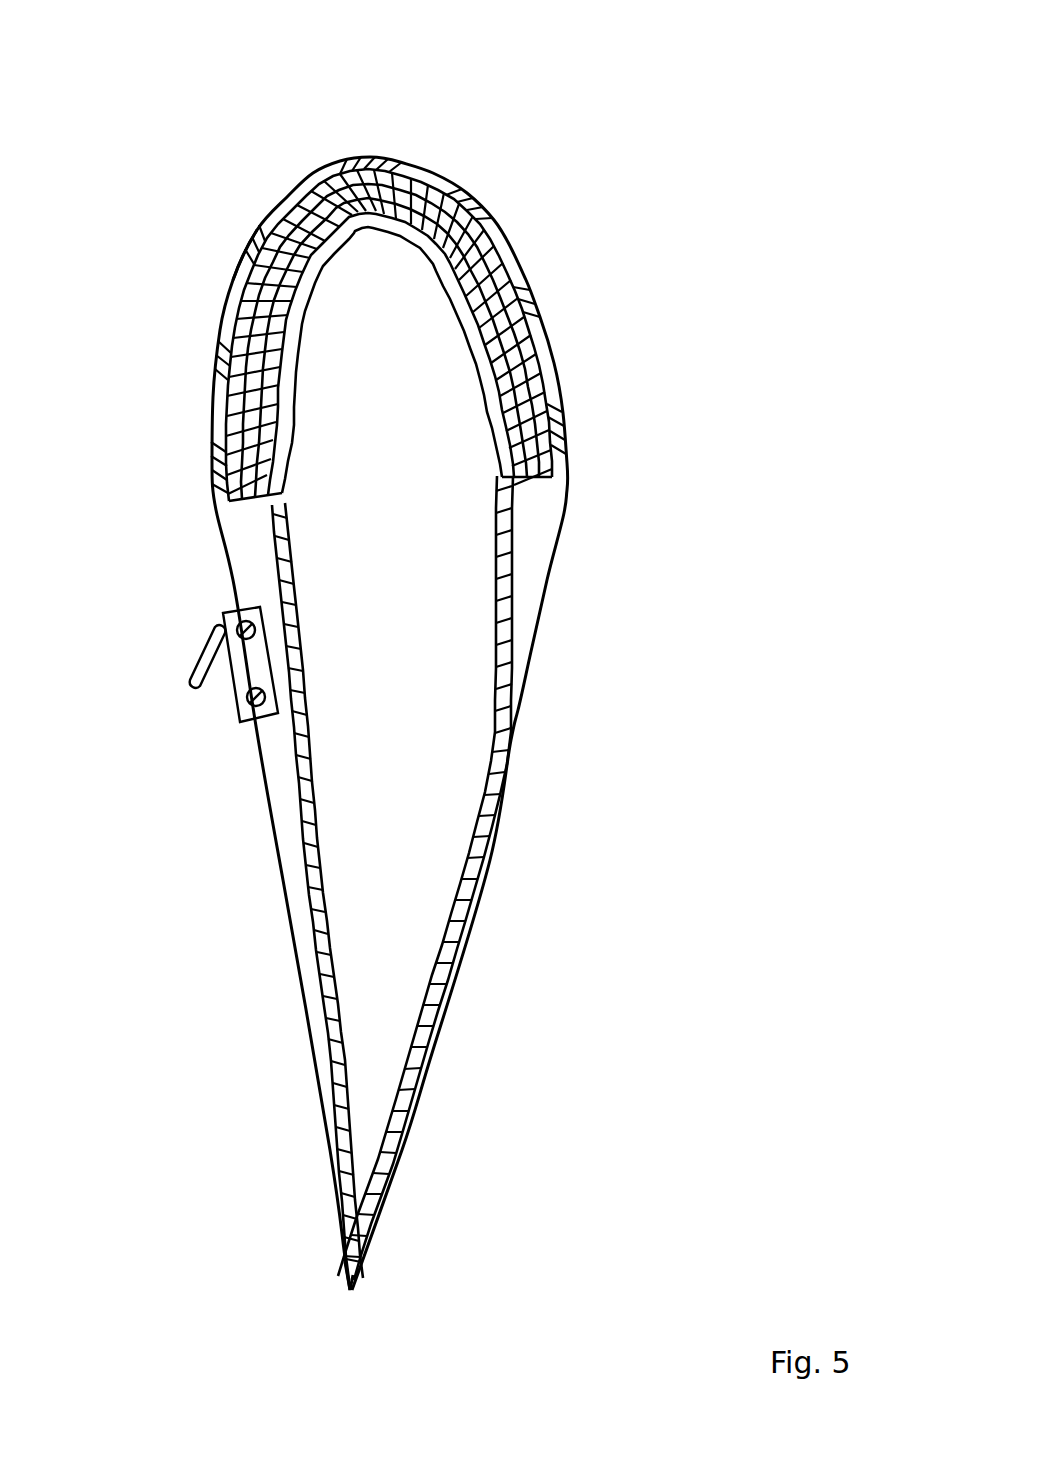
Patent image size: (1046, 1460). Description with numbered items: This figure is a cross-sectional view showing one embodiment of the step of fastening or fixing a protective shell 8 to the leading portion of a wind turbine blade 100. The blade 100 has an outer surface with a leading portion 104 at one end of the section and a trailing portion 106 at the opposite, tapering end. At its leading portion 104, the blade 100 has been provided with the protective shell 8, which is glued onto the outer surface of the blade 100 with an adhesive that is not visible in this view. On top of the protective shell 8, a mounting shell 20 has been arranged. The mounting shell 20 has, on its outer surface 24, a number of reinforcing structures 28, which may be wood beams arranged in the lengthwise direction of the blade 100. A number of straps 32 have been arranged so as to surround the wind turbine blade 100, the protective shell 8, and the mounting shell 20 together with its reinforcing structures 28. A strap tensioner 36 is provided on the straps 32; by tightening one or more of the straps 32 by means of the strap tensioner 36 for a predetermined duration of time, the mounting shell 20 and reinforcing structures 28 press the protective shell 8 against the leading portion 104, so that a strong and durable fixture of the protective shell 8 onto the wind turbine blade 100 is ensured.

The protective shell 8 is at (380, 207).
The mounting shell 20 is at (518, 347).
The outer surface 24 is at (495, 247).
The reinforcing structures 28 is at (465, 190).
The straps 32 is at (320, 163).
The strap tensioner 36 is at (248, 668).
The wind turbine blade 100 is at (450, 676).
The leading portion 104 is at (158, 197).
The trailing portion 106 is at (322, 1301).